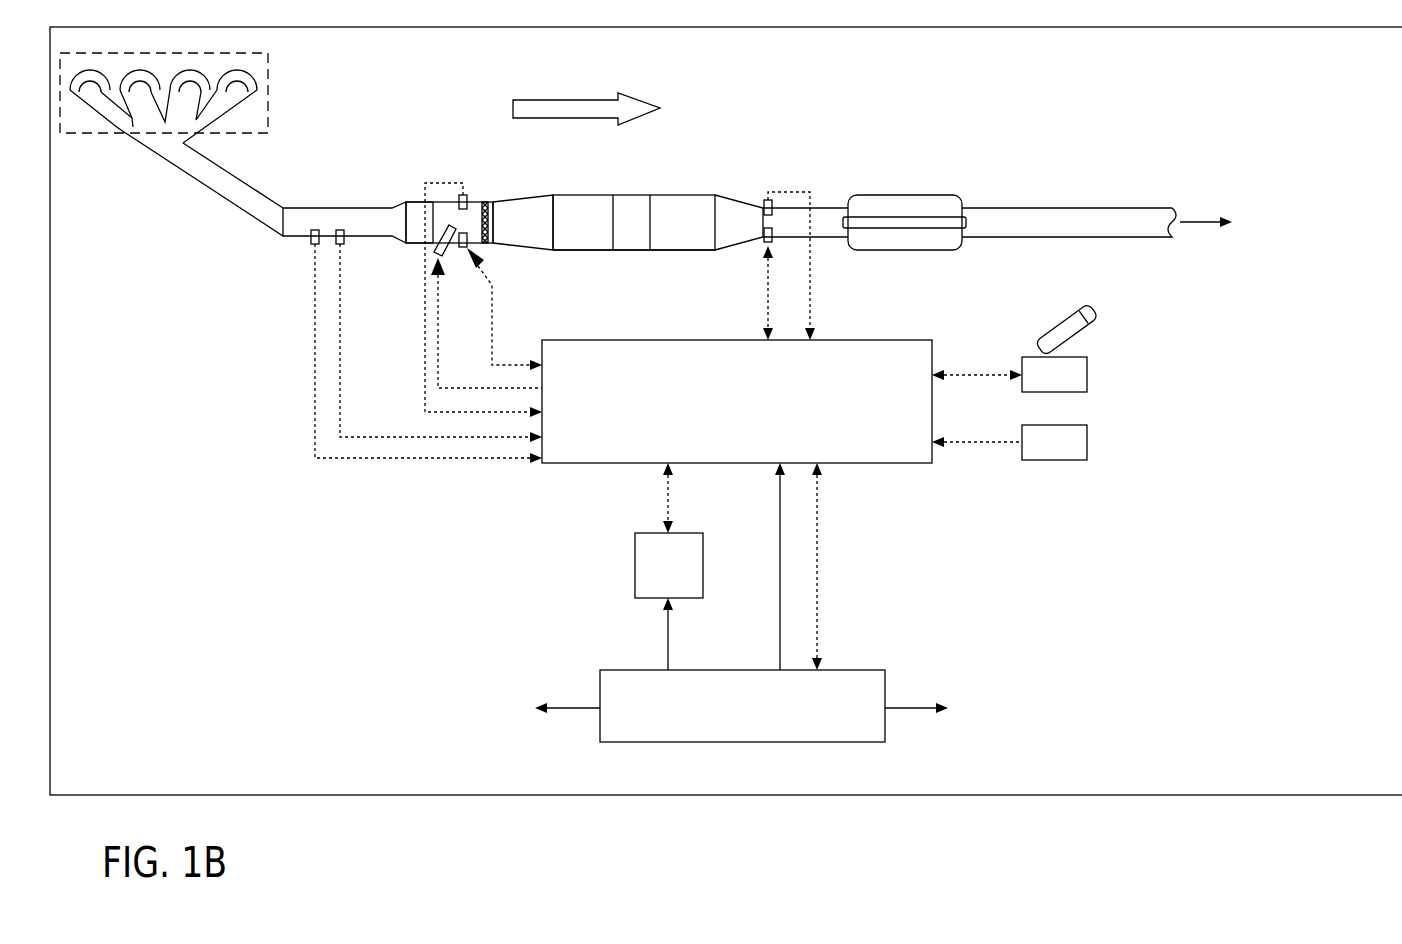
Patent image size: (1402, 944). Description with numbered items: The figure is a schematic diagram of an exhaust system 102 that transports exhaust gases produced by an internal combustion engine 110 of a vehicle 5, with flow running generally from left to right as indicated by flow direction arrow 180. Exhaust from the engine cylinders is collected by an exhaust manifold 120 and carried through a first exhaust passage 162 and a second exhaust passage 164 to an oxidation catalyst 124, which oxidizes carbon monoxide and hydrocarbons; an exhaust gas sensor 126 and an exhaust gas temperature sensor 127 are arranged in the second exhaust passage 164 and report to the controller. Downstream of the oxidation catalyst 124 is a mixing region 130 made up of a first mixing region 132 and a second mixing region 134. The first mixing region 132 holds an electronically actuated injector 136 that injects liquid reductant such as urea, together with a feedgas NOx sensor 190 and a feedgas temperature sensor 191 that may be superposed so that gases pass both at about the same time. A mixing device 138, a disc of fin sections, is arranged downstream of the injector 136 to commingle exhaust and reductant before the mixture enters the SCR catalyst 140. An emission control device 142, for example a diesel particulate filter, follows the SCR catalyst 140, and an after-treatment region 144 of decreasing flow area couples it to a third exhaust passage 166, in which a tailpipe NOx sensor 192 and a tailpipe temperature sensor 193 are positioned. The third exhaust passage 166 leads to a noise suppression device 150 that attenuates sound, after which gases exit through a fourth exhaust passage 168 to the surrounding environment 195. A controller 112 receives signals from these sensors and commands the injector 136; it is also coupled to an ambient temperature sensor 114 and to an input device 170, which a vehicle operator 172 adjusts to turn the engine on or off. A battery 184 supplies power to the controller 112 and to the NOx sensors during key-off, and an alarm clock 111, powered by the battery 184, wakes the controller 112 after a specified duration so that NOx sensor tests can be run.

The vehicle 5 is at (1391, 73).
The exhaust system 102 is at (160, 214).
The internal combustion engine 110 is at (270, 56).
The exhaust manifold 120 is at (130, 132).
The first exhaust passage 162 is at (222, 200).
The second exhaust passage 164 is at (333, 208).
The exhaust gas sensor 126 is at (311, 243).
The exhaust gas temperature sensor 127 is at (344, 243).
The oxidation catalyst 124 is at (412, 245).
The mixing region 130 is at (547, 166).
The feedgas temperature sensor 191 is at (464, 193).
The feedgas NOx sensor 190 is at (470, 243).
The injector 136 is at (446, 262).
The first mixing region 132 is at (485, 200).
The mixing device 138 is at (494, 217).
The second mixing region 134 is at (548, 200).
The SCR catalyst 140 is at (598, 195).
The emission control device 142 is at (693, 251).
The after-treatment region 144 is at (742, 244).
The tailpipe temperature sensor 193 is at (764, 200).
The tailpipe NOx sensor 192 is at (773, 243).
The third exhaust passage 166 is at (826, 208).
The noise suppression device 150 is at (905, 195).
The fourth exhaust passage 168 is at (1060, 208).
The surrounding environment 195 is at (1224, 222).
The flow direction arrow 180 is at (562, 100).
The controller 112 is at (751, 412).
The input device 170 is at (1068, 385).
The vehicle operator 172 is at (1082, 316).
The ambient temperature sensor 114 is at (1068, 453).
The alarm clock 111 is at (682, 576).
The battery 184 is at (756, 716).